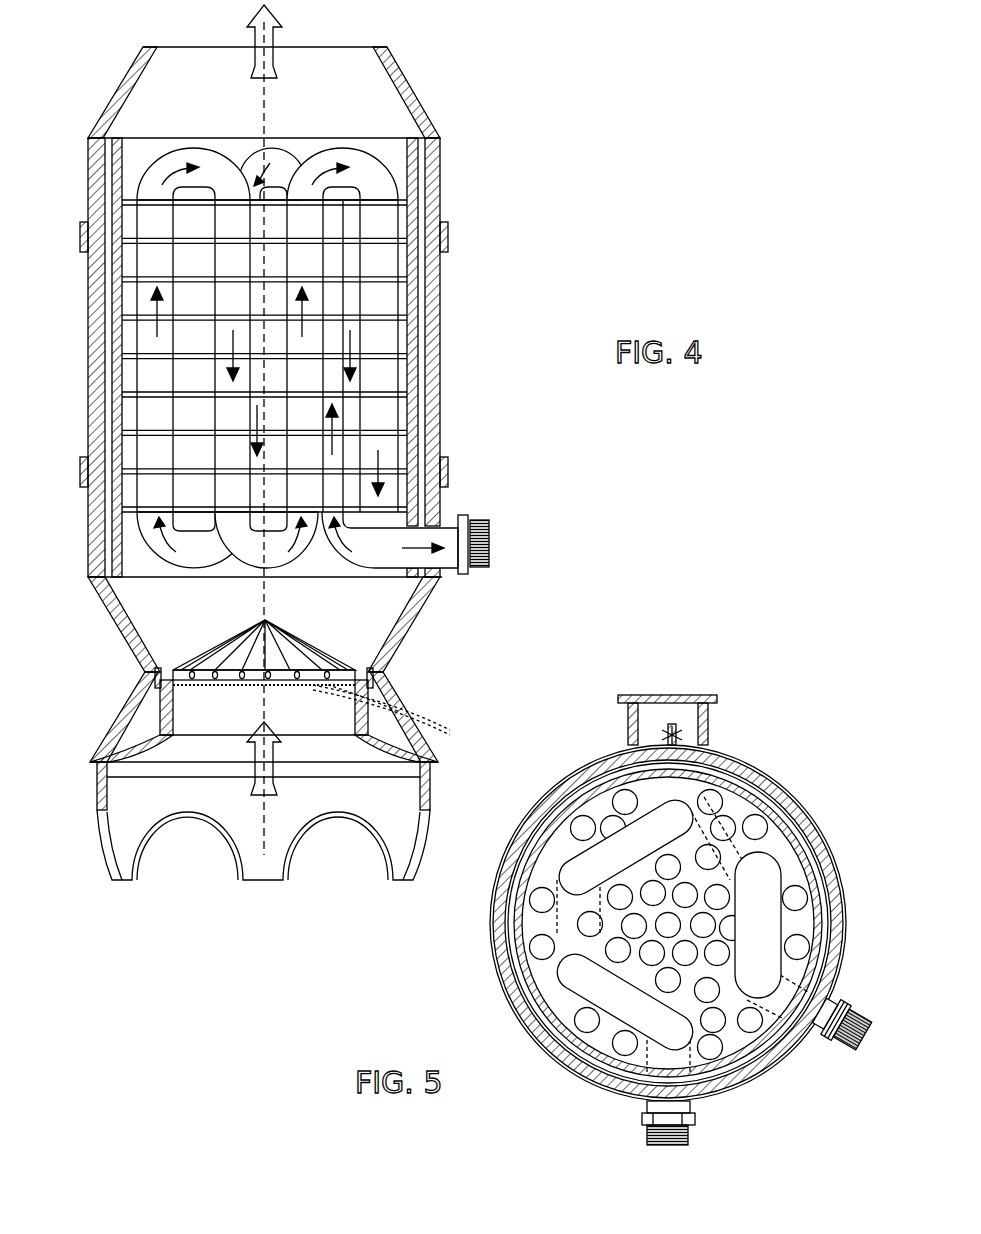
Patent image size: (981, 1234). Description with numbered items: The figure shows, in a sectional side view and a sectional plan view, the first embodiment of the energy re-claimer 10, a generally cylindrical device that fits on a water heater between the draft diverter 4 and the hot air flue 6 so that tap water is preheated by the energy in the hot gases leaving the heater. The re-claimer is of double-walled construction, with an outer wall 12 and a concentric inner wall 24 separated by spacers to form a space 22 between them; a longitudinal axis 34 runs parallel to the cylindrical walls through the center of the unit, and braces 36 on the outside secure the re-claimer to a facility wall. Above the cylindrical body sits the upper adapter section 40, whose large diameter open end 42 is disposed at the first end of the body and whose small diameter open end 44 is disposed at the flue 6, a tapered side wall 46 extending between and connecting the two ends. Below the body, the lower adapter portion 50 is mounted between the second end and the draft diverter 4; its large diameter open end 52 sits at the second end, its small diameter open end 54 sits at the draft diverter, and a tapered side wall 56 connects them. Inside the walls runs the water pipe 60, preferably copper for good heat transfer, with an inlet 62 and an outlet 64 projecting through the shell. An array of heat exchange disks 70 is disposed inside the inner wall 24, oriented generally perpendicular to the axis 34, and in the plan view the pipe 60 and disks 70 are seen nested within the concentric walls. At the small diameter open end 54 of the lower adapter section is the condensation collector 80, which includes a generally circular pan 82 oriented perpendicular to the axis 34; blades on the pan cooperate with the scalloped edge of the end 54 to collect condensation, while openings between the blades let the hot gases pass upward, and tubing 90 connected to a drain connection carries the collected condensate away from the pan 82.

In FIG. 4, the draft diverter 4 is at (148, 733).
In FIG. 4, the hot air flue 6 is at (102, 738).
In FIG. 4, the energy re-claimer 10 is at (533, 86).
In FIG. 5, the energy re-claimer 10 is at (445, 979).
In FIG. 4, the outer wall 12 is at (440, 283).
In FIG. 5, the outer wall 12 is at (782, 793).
In FIG. 4, the space 22 is at (422, 213).
In FIG. 5, the space 22 is at (808, 847).
In FIG. 4, the inner wall 24 is at (413, 335).
In FIG. 5, the inner wall 24 is at (820, 888).
In FIG. 4, the longitudinal axis 34 is at (265, 837).
In FIG. 4, the braces 36 is at (448, 235).
In FIG. 5, the braces 36 is at (587, 758).
In FIG. 4, the upper adapter section 40 is at (62, 96).
In FIG. 4, the large diameter open end 42 is at (96, 137).
In FIG. 4, the small diameter open end 44 is at (154, 47).
In FIG. 4, the tapered side wall 46 is at (417, 105).
In FIG. 4, the lower adapter portion 50 is at (80, 644).
In FIG. 4, the large diameter open end 52 is at (88, 577).
In FIG. 4, the small diameter open end 54 is at (393, 648).
In FIG. 4, the tapered side wall 56 is at (427, 605).
In FIG. 4, the water pipe 60 is at (383, 183).
In FIG. 5, the water pipe 60 is at (568, 878).
In FIG. 4, the inlet 62 is at (481, 522).
In FIG. 5, the inlet 62 is at (867, 1030).
In FIG. 4, the outlet 64 is at (490, 557).
In FIG. 5, the outlet 64 is at (670, 1143).
In FIG. 4, the heat exchange disks 70 is at (130, 283).
In FIG. 5, the heat exchange disks 70 is at (547, 840).
In FIG. 4, the condensation collector 80 is at (372, 671).
In FIG. 4, the pan 82 is at (155, 673).
In FIG. 4, the tubing 90 is at (440, 717).